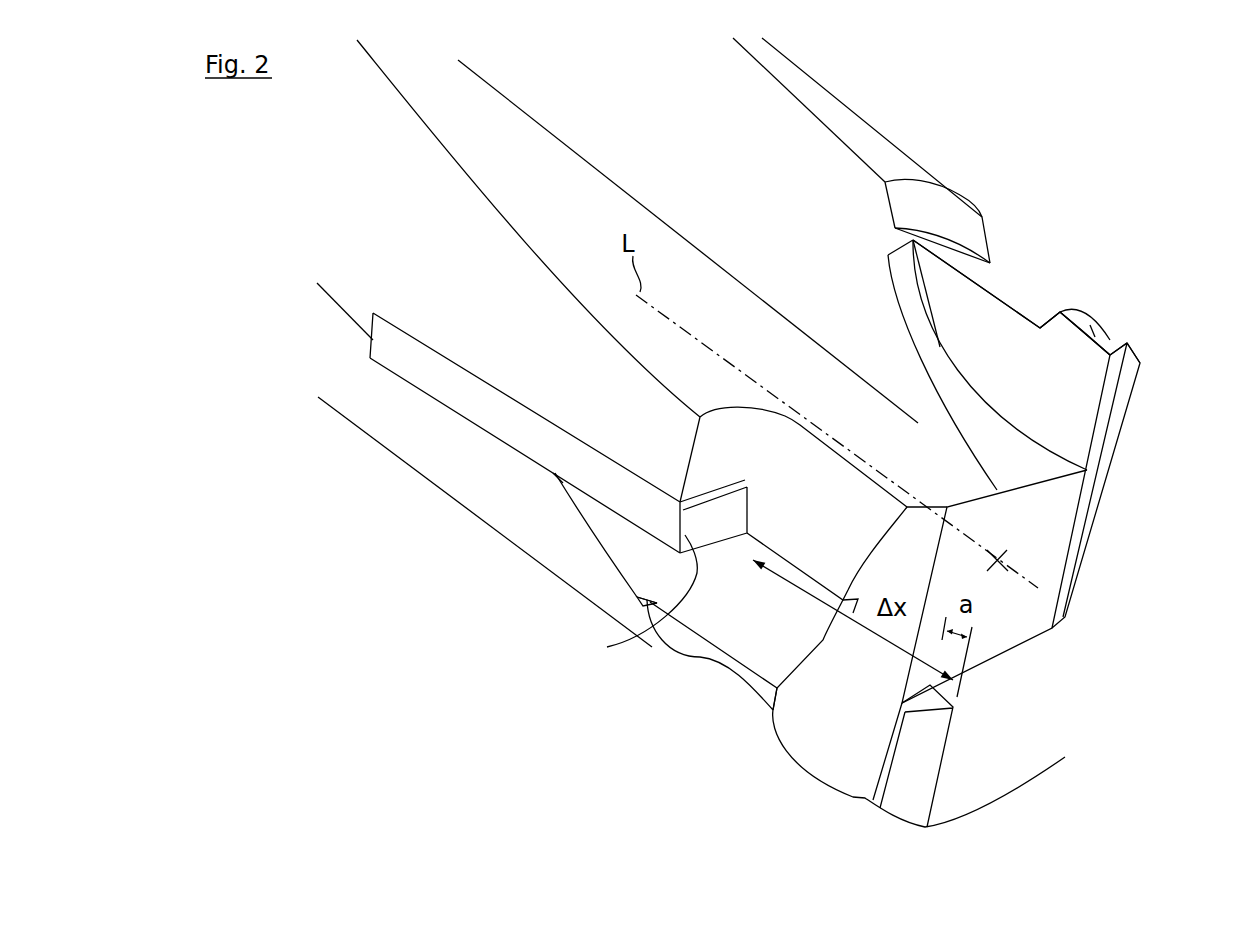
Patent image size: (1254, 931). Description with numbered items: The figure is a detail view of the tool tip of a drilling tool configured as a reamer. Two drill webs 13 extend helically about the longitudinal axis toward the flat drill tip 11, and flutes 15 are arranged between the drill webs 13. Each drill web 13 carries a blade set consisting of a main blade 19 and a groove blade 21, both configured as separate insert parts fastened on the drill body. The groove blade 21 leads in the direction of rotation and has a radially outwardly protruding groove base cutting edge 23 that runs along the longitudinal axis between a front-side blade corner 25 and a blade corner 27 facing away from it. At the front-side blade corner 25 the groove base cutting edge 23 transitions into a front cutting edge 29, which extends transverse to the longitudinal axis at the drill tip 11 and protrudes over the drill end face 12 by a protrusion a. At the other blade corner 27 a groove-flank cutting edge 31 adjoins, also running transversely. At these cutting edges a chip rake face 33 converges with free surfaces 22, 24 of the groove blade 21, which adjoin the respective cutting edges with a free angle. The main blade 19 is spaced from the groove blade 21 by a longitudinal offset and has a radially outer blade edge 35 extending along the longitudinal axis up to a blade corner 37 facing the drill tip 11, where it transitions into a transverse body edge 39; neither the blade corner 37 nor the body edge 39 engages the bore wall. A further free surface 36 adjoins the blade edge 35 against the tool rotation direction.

The drill tip 11 is at (1064, 508).
The drill end face 12 is at (1011, 525).
The drill web 13 is at (880, 157).
The flute 15 is at (754, 231).
The main blade 19 is at (382, 558).
The groove blade 21 is at (1192, 90).
The free surface 22 is at (1110, 413).
The groove base cutting edge 23 is at (1100, 326).
The free surface 24 is at (1075, 328).
The front-side blade corner 25 is at (1117, 345).
The blade corner 27 is at (1062, 326).
The front cutting edge 29 is at (1108, 390).
The groove-flank cutting edge 31 is at (1041, 325).
The chip rake face 33 is at (1043, 397).
The radially outer blade edge 35 is at (640, 522).
The free surface 36 is at (590, 470).
The blade corner 37 is at (640, 598).
The body edge 39 is at (607, 647).